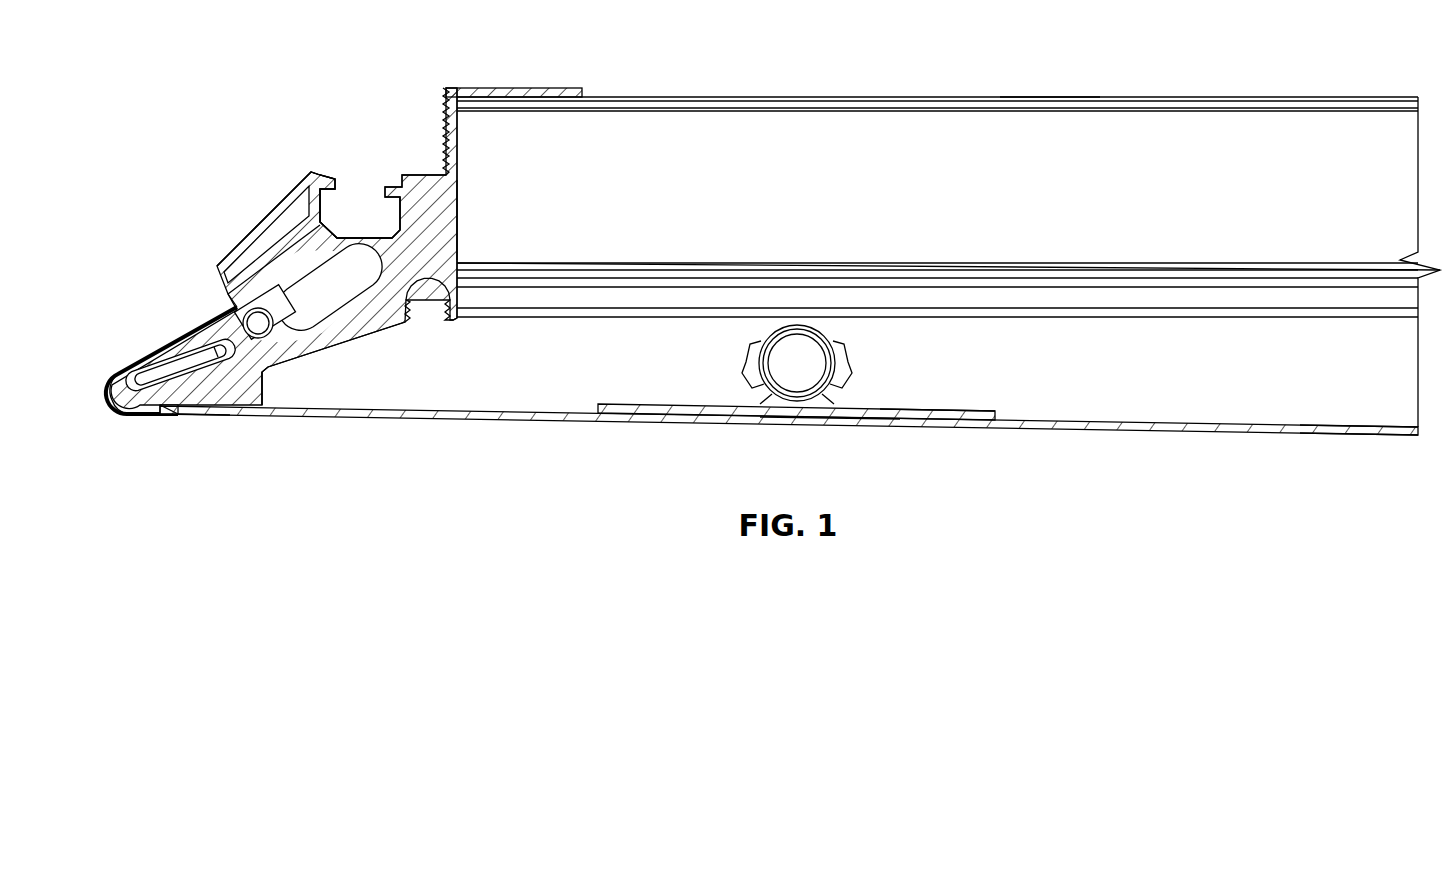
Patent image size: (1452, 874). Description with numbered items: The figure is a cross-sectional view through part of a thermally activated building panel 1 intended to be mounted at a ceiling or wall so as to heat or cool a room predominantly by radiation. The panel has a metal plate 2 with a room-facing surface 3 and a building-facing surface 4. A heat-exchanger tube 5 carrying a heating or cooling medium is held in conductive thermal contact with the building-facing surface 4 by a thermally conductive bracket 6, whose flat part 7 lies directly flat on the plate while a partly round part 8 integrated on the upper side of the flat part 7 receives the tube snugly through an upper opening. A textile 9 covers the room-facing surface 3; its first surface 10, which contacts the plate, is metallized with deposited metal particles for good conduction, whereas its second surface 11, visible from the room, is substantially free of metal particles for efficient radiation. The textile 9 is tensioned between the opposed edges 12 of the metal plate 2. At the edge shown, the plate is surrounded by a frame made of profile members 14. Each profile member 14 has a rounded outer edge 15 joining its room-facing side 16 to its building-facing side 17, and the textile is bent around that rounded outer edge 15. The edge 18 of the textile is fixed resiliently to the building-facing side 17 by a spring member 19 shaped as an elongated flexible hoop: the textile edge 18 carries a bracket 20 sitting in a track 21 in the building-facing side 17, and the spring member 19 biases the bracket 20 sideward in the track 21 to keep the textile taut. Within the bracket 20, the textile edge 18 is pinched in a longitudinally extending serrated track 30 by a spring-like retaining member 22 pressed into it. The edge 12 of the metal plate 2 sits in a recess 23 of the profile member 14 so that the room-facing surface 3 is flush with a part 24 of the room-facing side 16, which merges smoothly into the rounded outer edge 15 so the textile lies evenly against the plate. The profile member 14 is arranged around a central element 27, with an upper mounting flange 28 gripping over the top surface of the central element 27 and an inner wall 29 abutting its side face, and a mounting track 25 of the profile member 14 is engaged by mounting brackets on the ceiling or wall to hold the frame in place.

The thermally activated building panel 1 is at (1012, 49).
The metal plate 2 is at (1100, 425).
The room-facing surface 3 is at (1377, 436).
The building-facing surface 4 is at (1377, 419).
The heat-exchanger tube 5 is at (830, 348).
The thermally conductive bracket 6 is at (907, 404).
The flat part 7 is at (628, 405).
The partly round part 8 is at (752, 365).
The textile 9 is at (826, 425).
The first surface 10 is at (137, 357).
The second surface 11 is at (168, 340).
The opposed edges 12 is at (163, 413).
The profile member 14 is at (304, 177).
The rounded outer edge 15 is at (107, 397).
The room-facing side 16 is at (199, 430).
The building-facing side 17 is at (216, 302).
The edge of the textile 18 is at (187, 318).
The spring member 19 is at (159, 351).
The bracket 20 is at (308, 284).
The track 21 is at (179, 325).
The retaining member 22 is at (262, 296).
The recess 23 is at (176, 412).
The part of the room-facing side 24 is at (137, 417).
The mounting track 25 is at (366, 189).
The central element 27 is at (805, 140).
The upper mounting flange 28 is at (532, 87).
The inner wall 29 is at (458, 216).
The serrated track 30 is at (280, 389).